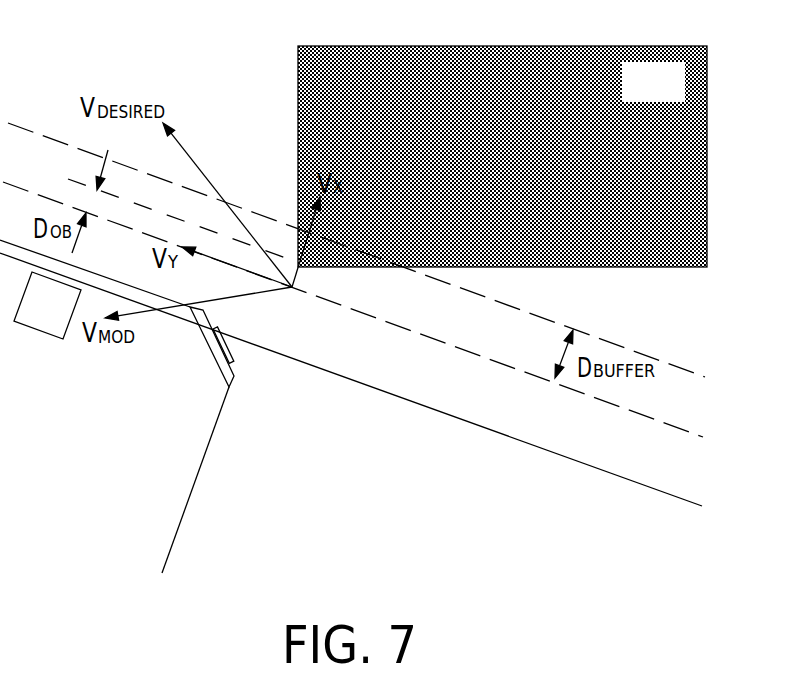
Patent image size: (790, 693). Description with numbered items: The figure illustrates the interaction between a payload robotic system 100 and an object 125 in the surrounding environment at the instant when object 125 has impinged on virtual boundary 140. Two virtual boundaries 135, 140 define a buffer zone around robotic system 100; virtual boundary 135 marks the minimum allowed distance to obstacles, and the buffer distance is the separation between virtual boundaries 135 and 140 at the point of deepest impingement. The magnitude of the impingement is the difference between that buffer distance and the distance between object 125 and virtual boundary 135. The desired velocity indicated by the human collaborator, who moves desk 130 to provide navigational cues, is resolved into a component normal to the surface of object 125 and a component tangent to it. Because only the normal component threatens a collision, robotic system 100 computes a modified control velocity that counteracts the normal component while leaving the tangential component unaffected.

The robotic system 100 is at (192, 491).
The object 125 is at (670, 92).
The desk 130 is at (575, 462).
The virtual boundary 135 is at (658, 358).
The virtual boundary 140 is at (655, 418).